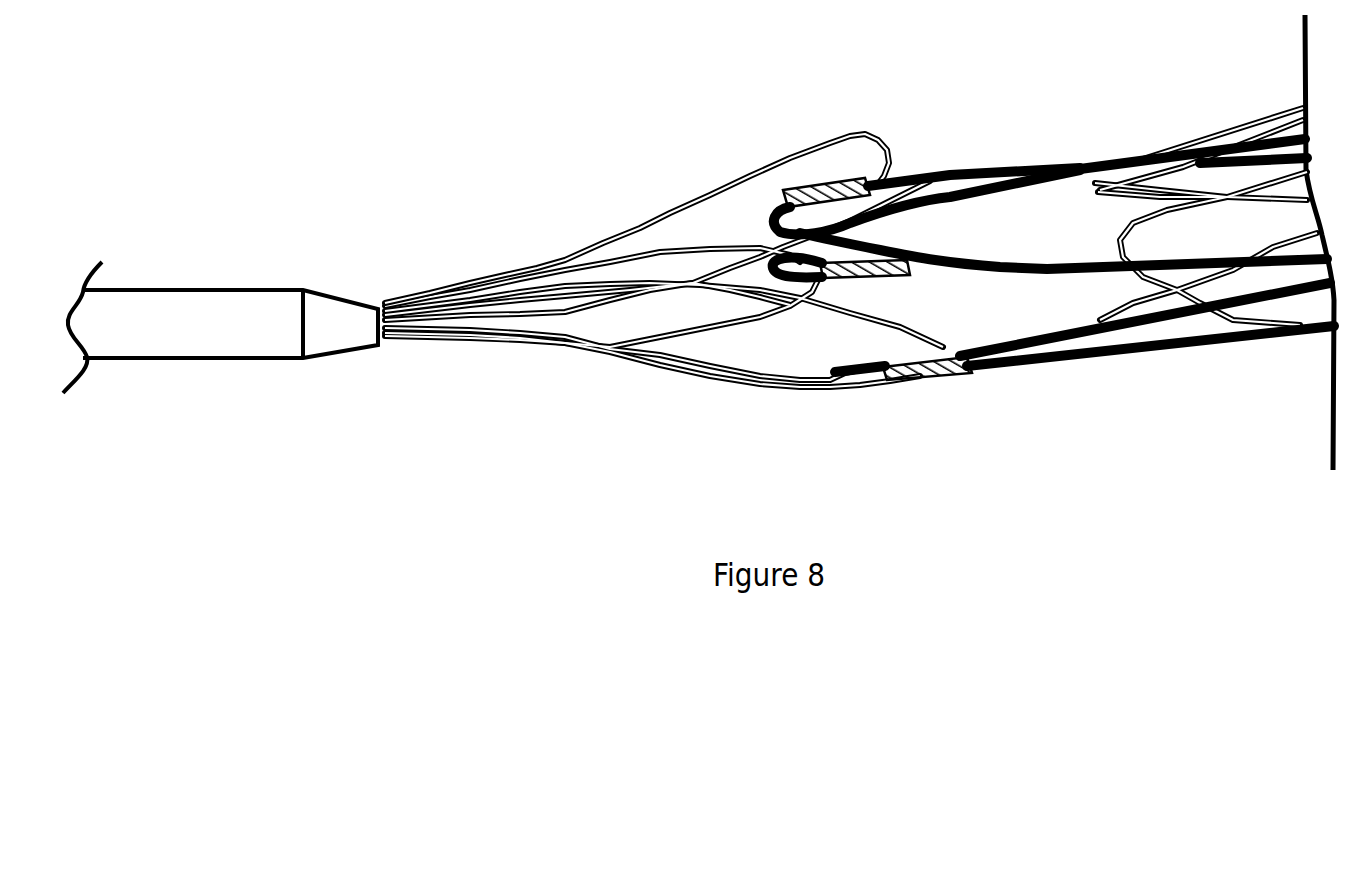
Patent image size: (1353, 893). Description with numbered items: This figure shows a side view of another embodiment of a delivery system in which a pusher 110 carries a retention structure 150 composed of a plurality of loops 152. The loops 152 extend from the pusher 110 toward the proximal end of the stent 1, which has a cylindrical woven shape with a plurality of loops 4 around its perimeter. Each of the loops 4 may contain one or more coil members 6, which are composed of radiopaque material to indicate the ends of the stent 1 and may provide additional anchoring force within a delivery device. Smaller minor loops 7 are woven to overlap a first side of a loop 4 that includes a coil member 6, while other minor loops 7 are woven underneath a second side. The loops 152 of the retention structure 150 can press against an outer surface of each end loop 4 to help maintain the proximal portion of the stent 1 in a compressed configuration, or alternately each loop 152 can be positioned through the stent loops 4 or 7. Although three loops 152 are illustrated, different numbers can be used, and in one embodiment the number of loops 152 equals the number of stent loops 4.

The pusher 110 is at (245, 290).
The retention structure 150 is at (498, 209).
The loops 152 is at (637, 224).
The stent 1 is at (994, 104).
The loops 4 is at (1082, 163).
The minor loops 7 is at (1247, 128).
The coil members 6 is at (953, 380).